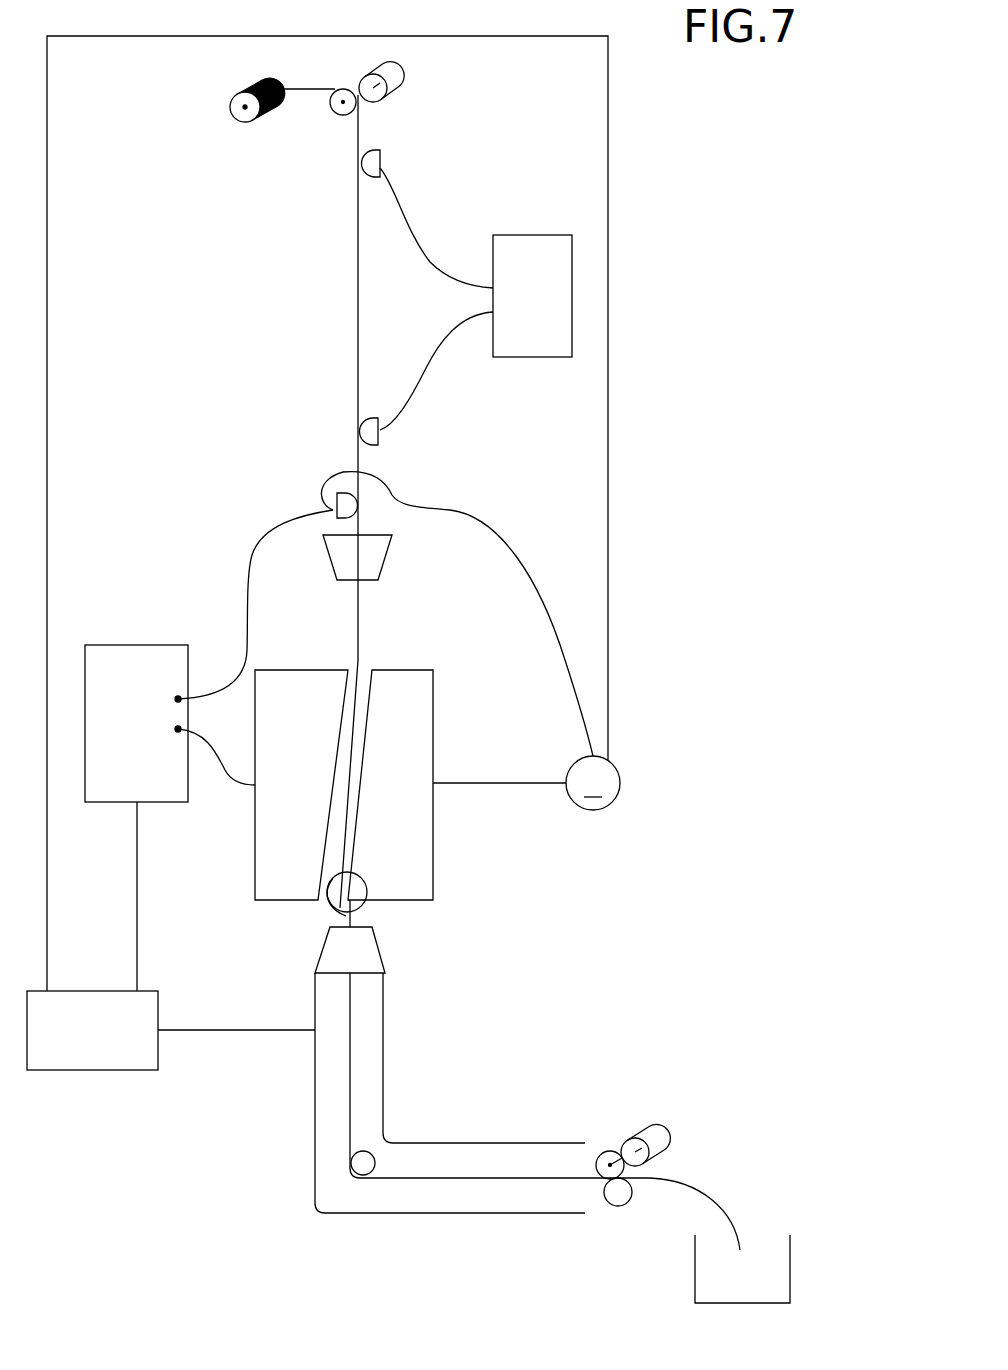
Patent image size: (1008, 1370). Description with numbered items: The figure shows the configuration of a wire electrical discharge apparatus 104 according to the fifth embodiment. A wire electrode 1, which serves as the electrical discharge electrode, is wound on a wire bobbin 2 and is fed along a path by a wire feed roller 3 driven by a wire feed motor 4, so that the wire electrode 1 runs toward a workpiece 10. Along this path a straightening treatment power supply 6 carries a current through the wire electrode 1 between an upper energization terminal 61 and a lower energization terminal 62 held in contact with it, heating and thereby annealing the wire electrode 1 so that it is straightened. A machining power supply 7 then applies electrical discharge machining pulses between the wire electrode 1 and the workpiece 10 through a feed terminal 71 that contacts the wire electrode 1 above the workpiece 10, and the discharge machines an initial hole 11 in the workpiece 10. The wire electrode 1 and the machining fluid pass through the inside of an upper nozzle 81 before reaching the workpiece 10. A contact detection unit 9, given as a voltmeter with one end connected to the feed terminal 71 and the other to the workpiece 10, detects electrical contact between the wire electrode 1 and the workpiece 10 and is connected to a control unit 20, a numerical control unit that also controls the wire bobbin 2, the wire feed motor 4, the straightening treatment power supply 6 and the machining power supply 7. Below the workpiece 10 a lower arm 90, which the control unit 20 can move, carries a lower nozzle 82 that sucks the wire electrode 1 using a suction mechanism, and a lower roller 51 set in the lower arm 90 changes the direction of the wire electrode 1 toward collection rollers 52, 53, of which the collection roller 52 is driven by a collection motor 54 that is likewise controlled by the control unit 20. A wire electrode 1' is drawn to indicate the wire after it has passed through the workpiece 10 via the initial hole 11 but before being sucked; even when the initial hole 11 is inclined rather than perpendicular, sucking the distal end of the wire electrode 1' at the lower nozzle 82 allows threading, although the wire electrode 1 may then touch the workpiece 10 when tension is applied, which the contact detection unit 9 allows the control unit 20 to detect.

The wire electrical discharge apparatus 104 is at (693, 121).
The wire electrode 1 is at (540, 672).
The wire electrode prior to being sucked 1' is at (282, 928).
The wire bobbin 2 is at (232, 112).
The wire feed roller 3 is at (334, 110).
The wire feed motor 4 is at (400, 76).
The straightening treatment power supply 6 is at (520, 235).
The upper energization terminal 61 is at (378, 150).
The lower energization terminal 62 is at (380, 447).
The machining power supply 7 is at (140, 645).
The feed terminal 71 is at (332, 515).
The upper nozzle 81 is at (390, 556).
The lower nozzle 82 is at (386, 944).
The contact detection unit 9 is at (620, 783).
The workpiece 10 is at (256, 712).
The initial hole 11 is at (353, 813).
The control unit 20 is at (160, 1052).
The lower arm 90 is at (480, 1143).
The lower roller 51 is at (376, 1162).
The collection roller 52 is at (608, 1151).
The collection roller 53 is at (618, 1207).
The collection motor 54 is at (653, 1134).